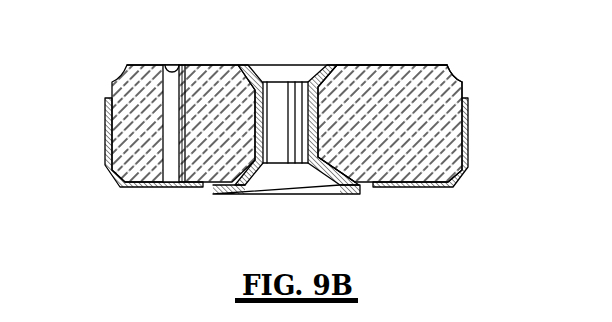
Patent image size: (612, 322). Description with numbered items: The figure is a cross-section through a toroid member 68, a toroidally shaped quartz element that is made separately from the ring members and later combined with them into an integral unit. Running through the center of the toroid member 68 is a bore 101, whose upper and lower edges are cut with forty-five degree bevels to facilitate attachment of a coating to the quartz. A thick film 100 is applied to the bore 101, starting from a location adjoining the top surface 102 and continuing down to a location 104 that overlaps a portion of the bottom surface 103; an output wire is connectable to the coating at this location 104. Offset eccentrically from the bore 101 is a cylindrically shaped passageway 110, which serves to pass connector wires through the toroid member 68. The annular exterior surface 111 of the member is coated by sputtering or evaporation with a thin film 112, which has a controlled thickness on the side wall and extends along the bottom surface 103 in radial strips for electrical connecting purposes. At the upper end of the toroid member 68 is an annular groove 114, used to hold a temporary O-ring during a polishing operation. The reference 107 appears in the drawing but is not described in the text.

The thick film 100 is at (313, 175).
The bore 101 is at (312, 103).
The top surface 102 is at (410, 65).
The bottom surface 103 is at (368, 190).
The location 104 is at (354, 194).
The liner 107 is at (318, 66).
The cylindrically shaped passageway 110 is at (172, 63).
The annular exterior surface 111 is at (463, 85).
The thin film 112 is at (468, 153).
The annular groove 114 is at (448, 72).
The toroid member 68 is at (432, 106).